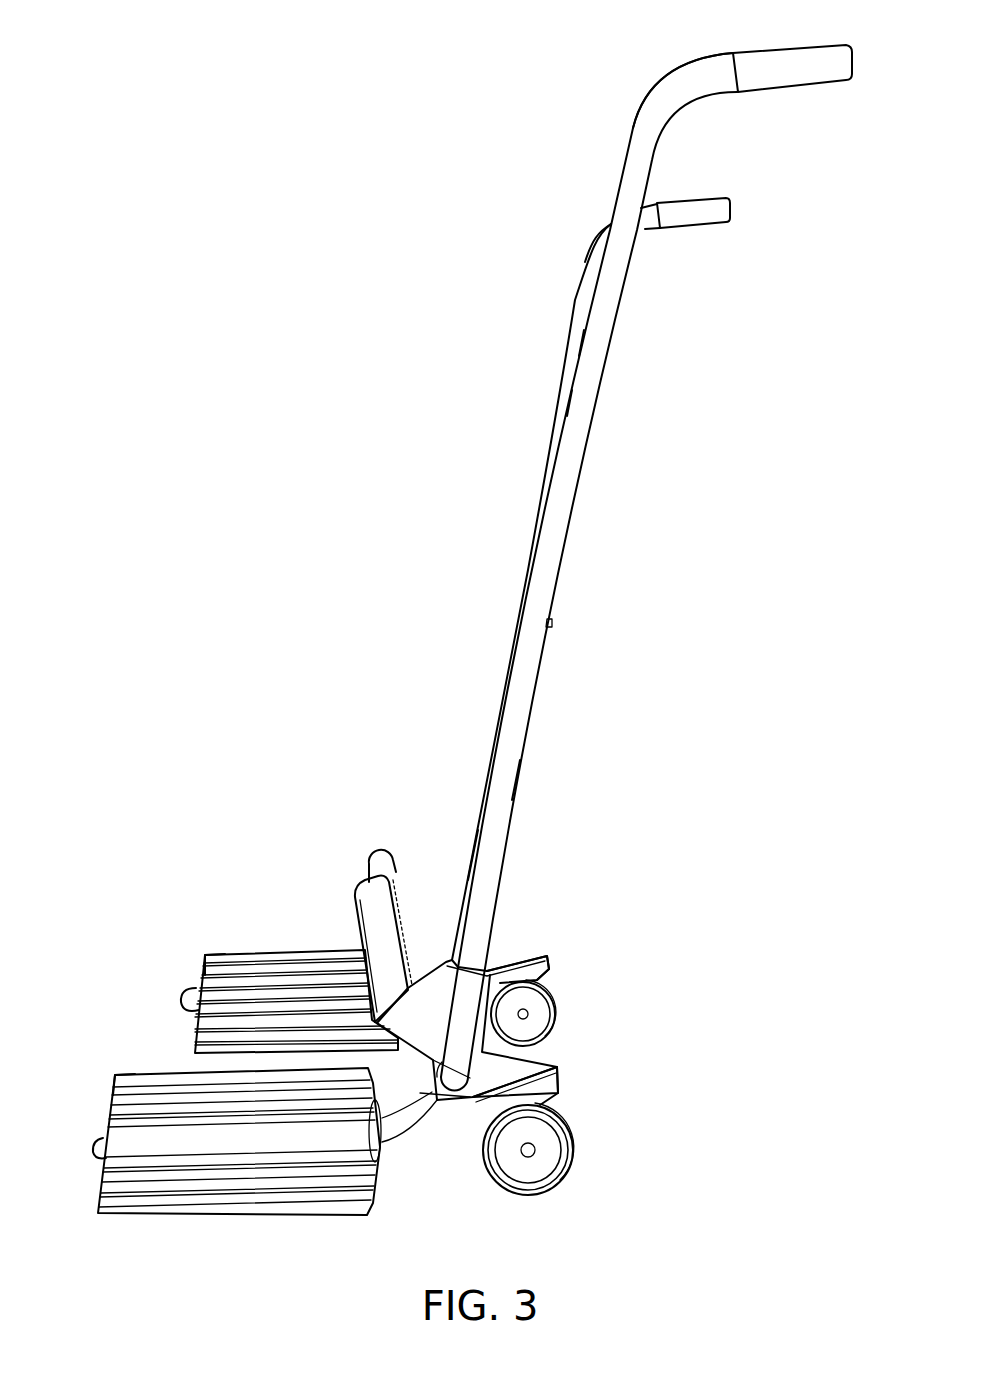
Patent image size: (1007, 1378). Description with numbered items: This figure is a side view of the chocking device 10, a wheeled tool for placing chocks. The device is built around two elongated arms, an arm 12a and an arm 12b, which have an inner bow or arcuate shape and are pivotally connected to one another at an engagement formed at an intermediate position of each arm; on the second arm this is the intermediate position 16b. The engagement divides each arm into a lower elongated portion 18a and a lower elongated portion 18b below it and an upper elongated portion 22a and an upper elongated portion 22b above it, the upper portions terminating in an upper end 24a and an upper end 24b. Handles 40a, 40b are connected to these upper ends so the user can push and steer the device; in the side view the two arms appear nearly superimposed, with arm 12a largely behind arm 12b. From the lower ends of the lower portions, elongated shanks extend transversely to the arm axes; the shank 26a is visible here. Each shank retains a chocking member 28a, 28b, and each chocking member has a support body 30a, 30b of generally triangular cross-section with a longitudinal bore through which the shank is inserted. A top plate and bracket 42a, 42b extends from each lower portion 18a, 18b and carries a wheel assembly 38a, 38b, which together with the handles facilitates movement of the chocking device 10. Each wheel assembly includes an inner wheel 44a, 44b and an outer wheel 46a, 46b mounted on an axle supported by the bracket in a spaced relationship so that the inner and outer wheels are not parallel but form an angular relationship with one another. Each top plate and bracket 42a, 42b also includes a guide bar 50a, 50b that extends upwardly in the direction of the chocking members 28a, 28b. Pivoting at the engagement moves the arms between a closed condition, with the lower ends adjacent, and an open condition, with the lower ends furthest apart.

The chocking device 10 is at (146, 115).
The arm 12a is at (574, 305).
The arm 12b is at (602, 394).
The intermediate position 16b is at (535, 620).
The lower elongated portion 18a is at (474, 856).
The lower elongated portion 18b is at (502, 780).
The upper elongated portion 22a is at (578, 343).
The upper elongated portion 22b is at (583, 400).
The upper end 24a is at (600, 234).
The upper end 24b is at (673, 86).
The elongated shank 26a is at (190, 996).
The chocking member 28a is at (232, 956).
The chocking member 28b is at (133, 1207).
The support body 30a is at (207, 968).
The support body 30b is at (115, 1090).
The wheel assembly 38a is at (555, 971).
The wheel assembly 38b is at (582, 1152).
The handle 40a is at (700, 206).
The handle 40b is at (790, 54).
The top plate and bracket 42a is at (516, 958).
The top plate and bracket 42b is at (463, 1097).
The inner wheel 44a is at (548, 1020).
The inner wheel 44b is at (575, 1102).
The outer wheel 46a is at (556, 984).
The outer wheel 46b is at (530, 1185).
The guide bar 50a is at (376, 866).
The guide bar 50b is at (358, 910).